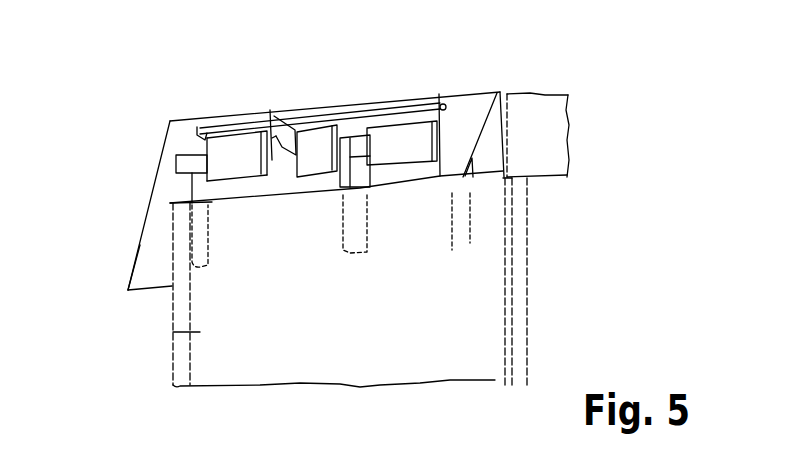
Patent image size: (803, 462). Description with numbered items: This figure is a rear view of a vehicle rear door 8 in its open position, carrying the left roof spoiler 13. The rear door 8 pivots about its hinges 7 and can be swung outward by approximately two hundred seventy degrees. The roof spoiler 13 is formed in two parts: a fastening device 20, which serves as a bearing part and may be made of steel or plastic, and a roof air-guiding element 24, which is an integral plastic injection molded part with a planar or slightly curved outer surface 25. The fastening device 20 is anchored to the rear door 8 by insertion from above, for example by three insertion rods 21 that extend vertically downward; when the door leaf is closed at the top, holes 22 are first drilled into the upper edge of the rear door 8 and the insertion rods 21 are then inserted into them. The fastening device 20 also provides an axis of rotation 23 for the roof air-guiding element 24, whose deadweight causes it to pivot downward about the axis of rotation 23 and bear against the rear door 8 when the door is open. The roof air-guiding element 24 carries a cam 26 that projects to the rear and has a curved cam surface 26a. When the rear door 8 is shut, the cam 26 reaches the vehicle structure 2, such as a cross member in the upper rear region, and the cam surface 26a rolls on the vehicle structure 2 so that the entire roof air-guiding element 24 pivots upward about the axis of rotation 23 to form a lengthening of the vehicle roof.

The vehicle structure 2 is at (547, 123).
The hinge 7 is at (507, 203).
The rear door 8 is at (300, 363).
The roof spoiler 13 is at (170, 121).
The fastening device 20 is at (267, 191).
The insertion rod 21 is at (472, 241).
The hole 22 is at (190, 203).
The axis of rotation 23 is at (191, 130).
The roof air-guiding element 24 is at (150, 255).
The outer surface 25 is at (133, 273).
The cam 26 is at (272, 111).
The cam surface 26a is at (283, 117).